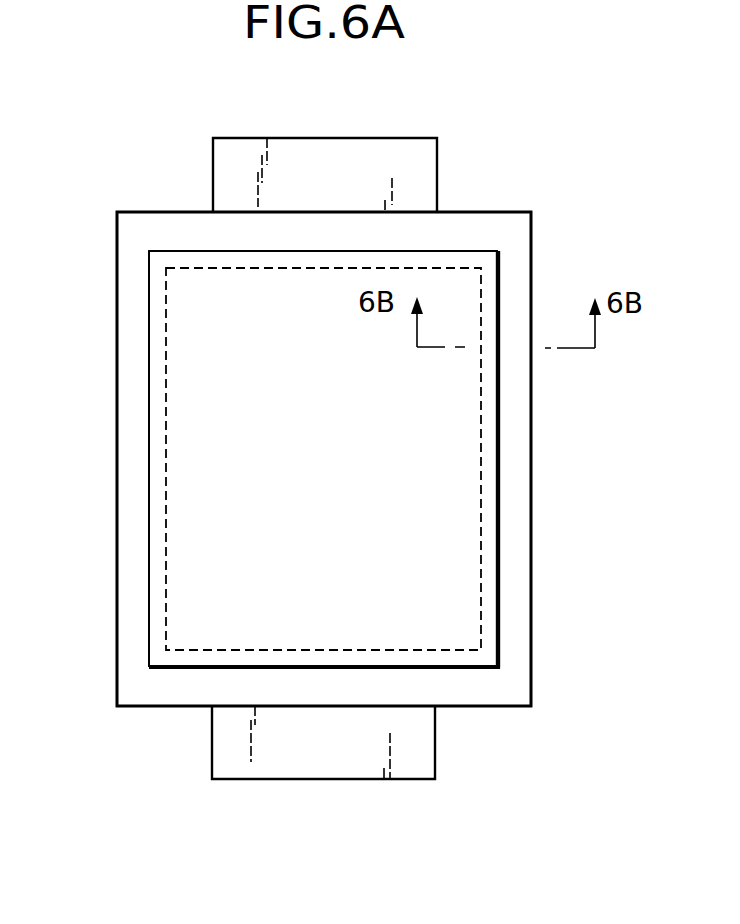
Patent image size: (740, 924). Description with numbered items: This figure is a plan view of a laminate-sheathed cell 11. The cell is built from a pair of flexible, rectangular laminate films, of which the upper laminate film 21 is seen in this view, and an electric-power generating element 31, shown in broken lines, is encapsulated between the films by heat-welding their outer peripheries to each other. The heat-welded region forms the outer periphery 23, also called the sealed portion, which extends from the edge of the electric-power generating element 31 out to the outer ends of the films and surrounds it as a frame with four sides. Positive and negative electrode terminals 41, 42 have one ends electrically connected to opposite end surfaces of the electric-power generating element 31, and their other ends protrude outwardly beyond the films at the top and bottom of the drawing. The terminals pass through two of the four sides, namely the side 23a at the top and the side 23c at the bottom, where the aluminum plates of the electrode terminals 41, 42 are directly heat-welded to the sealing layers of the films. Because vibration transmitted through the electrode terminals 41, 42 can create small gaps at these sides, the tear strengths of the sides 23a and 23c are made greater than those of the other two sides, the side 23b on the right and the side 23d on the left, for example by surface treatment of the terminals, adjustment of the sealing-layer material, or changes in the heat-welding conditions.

The laminate-sheathed cell 11 is at (152, 141).
The laminate film 21 is at (531, 247).
The outer periphery 23 is at (505, 537).
The side 23a is at (314, 242).
The side 23b is at (488, 439).
The side 23c is at (314, 676).
The side 23d is at (140, 449).
The electric-power generating element 31 is at (165, 352).
The positive electrode terminal 41 is at (437, 178).
The negative electrode terminal 42 is at (435, 752).